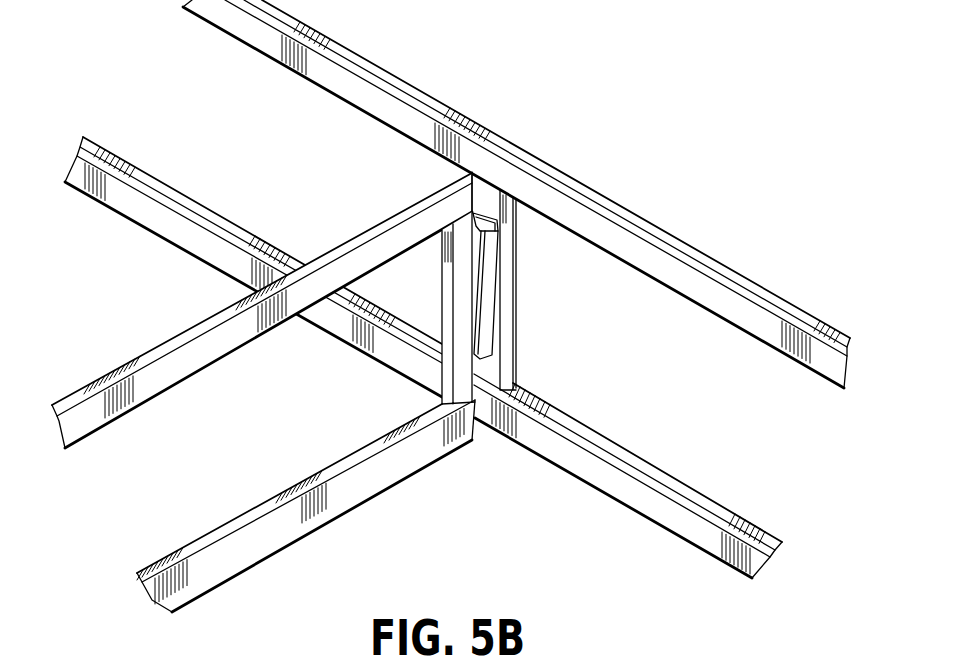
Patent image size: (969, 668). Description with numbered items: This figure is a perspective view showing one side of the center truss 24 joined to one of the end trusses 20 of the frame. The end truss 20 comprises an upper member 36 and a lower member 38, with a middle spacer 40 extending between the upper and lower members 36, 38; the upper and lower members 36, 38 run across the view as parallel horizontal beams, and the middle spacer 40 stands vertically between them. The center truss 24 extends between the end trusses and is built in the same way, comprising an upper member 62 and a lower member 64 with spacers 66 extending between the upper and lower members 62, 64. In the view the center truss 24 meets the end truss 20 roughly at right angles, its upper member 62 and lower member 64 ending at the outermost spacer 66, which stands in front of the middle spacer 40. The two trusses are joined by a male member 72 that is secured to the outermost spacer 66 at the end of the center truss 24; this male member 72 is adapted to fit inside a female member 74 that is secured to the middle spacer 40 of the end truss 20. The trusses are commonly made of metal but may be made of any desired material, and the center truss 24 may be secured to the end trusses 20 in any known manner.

The end truss 20 is at (516, 289).
The center truss 24 is at (260, 396).
The upper member 36 is at (397, 81).
The lower member 38 is at (615, 488).
The middle spacer 40 is at (512, 352).
The upper member 62 is at (180, 335).
The lower member 64 is at (237, 562).
The spacer 66 is at (447, 372).
The male member 72 is at (477, 257).
The female member 74 is at (490, 278).